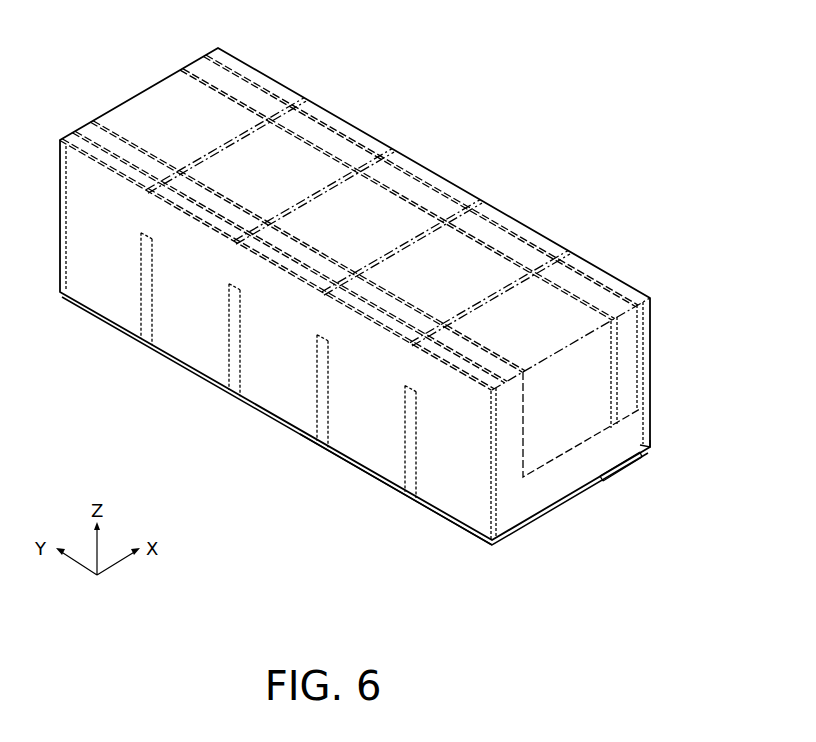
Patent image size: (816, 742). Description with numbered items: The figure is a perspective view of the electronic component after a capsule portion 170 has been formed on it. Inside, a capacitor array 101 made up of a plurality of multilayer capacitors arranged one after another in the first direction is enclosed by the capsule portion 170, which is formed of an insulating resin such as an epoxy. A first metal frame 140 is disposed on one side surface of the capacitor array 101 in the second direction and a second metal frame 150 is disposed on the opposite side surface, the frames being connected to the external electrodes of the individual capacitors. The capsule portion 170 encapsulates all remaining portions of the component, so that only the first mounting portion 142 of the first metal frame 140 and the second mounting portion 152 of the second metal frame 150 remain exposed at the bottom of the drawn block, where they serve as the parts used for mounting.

The capacitor array 101 is at (118, 103).
The capsule portion 170 is at (313, 103).
The first metal frame 140 is at (432, 508).
The first mounting portion 142 is at (464, 531).
The second metal frame 150 is at (633, 465).
The second mounting portion 152 is at (644, 457).